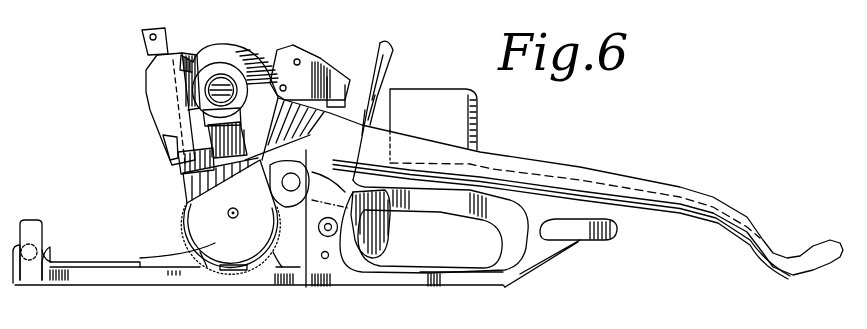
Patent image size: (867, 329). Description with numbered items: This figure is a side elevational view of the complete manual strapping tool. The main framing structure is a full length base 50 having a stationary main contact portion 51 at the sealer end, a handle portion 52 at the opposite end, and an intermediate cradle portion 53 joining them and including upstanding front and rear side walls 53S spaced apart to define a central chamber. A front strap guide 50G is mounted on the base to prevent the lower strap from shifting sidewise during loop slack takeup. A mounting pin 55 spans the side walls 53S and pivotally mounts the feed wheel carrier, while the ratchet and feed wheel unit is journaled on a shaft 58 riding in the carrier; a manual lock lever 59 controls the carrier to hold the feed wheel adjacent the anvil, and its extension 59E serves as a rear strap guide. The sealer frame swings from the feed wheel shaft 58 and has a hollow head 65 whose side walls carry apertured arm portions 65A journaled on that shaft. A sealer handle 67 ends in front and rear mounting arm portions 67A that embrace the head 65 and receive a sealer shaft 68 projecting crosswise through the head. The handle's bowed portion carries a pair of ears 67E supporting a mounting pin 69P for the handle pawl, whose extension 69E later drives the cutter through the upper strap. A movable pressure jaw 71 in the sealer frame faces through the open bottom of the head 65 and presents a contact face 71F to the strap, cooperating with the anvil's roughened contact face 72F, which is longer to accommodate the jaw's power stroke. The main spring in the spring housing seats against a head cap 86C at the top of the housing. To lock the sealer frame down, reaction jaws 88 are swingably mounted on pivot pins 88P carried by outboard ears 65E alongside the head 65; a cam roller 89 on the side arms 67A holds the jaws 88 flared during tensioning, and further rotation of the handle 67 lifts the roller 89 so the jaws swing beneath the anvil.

The base 50 is at (248, 276).
The front strap guide 50G is at (32, 196).
The main contact portion 51 is at (53, 283).
The handle portion 52 is at (393, 281).
The cradle portion 53 is at (330, 272).
The side walls 53S is at (304, 215).
The mounting pin 55 is at (295, 181).
The feed wheel shaft 58 is at (228, 214).
The lock lever 59 is at (394, 66).
The extension 59E is at (391, 240).
The head 65 is at (226, 45).
The arm portions 65A is at (188, 190).
The outboard ears 65E is at (191, 55).
The sealer handle 67 is at (576, 162).
The mounting arm portions 67A is at (308, 155).
The ears 67E is at (312, 72).
The sealer shaft 68 is at (222, 90).
The mounting pin 69P is at (270, 50).
The handle pawl extension 69E is at (285, 48).
The movable pressure jaw 71 is at (170, 160).
The jaw contact face 71F is at (165, 146).
The contact face 72F is at (87, 262).
The head cap 86C is at (430, 119).
The reaction jaws 88 is at (158, 106).
The pivot pins 88P is at (163, 29).
The cam roller 89 is at (228, 143).